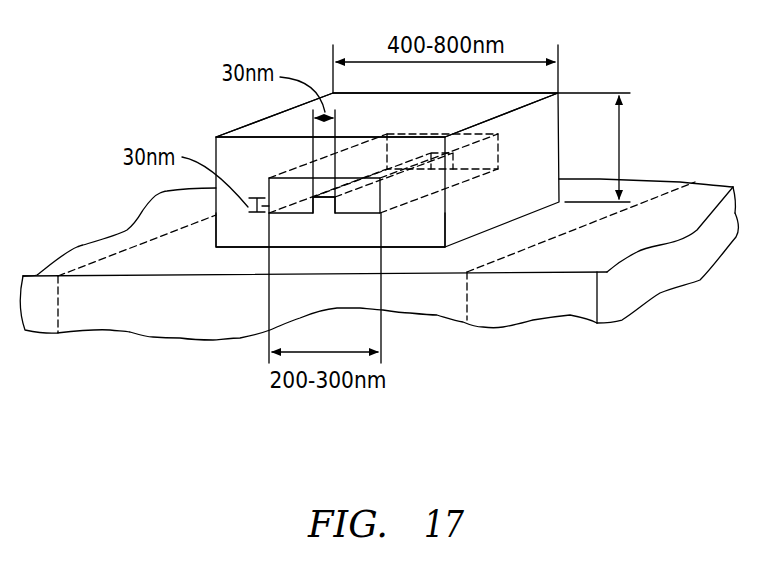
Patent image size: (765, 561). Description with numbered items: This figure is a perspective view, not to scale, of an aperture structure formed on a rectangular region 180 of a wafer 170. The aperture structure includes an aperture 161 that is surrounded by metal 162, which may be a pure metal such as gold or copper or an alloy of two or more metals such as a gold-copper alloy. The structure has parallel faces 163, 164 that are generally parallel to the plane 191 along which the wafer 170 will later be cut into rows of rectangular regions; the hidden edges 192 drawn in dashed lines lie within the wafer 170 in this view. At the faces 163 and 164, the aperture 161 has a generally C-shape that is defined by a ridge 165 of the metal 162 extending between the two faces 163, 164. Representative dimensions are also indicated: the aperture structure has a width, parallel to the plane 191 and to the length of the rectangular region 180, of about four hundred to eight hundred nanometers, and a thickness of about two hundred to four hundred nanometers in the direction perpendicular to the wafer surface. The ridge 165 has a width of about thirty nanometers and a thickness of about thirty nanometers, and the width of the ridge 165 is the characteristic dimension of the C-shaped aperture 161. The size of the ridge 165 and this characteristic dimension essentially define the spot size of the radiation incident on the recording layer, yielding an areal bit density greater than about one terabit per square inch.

The aperture 161 is at (383, 208).
The metal 162 is at (213, 241).
The face 163 is at (562, 125).
The face 164 is at (258, 240).
The ridge 165 is at (322, 203).
The wafer 170 is at (677, 277).
The rectangular region 180 is at (662, 188).
The plane 191 is at (173, 328).
The hidden edge 192 is at (58, 322).